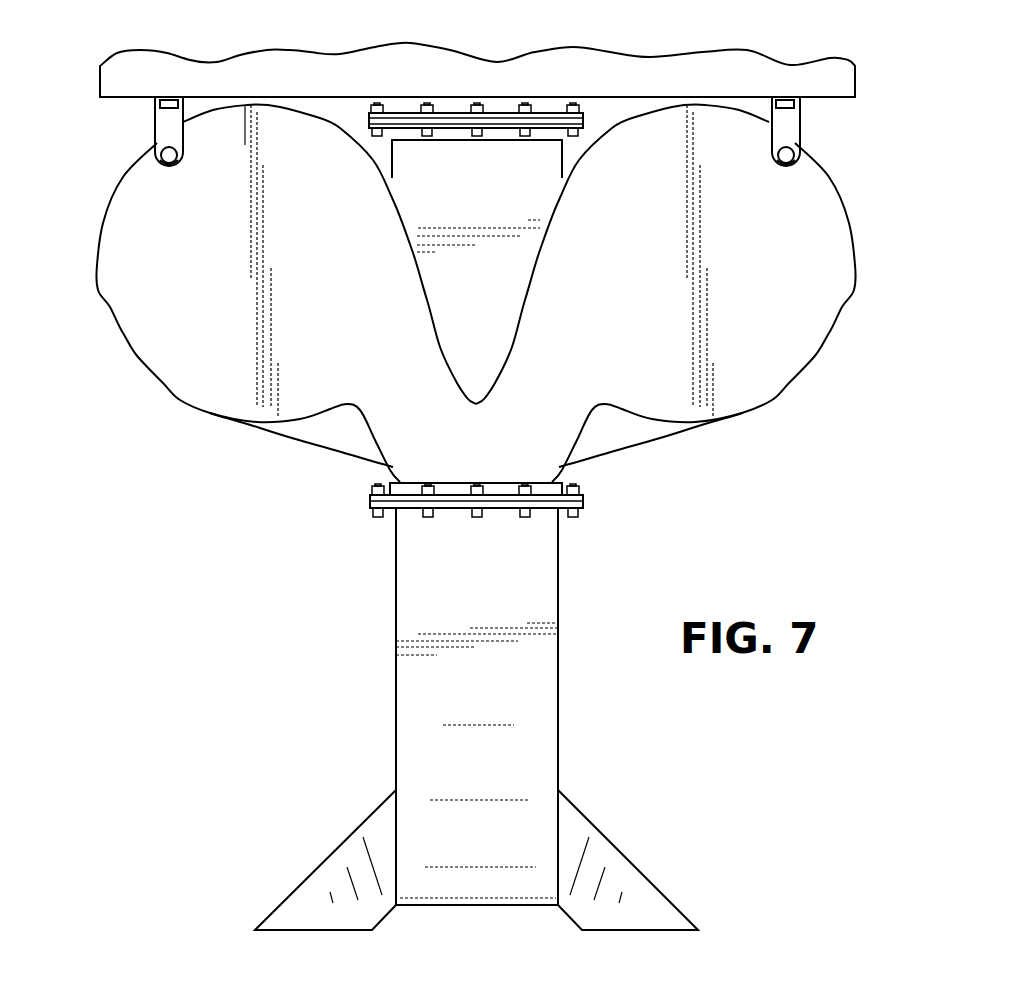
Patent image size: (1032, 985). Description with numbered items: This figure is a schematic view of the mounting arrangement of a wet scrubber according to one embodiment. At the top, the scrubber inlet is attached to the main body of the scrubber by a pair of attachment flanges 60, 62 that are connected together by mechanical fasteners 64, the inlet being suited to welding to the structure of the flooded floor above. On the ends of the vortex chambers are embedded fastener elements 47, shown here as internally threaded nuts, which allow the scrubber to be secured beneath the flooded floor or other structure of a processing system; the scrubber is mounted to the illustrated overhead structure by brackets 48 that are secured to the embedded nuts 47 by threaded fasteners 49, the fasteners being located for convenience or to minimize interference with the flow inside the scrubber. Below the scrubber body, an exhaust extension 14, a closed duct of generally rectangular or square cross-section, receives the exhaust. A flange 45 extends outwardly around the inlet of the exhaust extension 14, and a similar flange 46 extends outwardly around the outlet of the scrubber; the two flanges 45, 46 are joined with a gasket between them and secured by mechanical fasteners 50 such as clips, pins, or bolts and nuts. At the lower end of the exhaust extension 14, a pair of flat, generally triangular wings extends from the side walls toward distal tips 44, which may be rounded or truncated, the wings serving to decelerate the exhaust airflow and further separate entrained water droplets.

The exhaust extension 14 is at (472, 722).
The tip of the wings 44 is at (238, 930).
The flange 45 is at (587, 503).
The flange 46 is at (586, 496).
The embedded fastener elements 47 is at (157, 160).
The brackets 48 is at (155, 123).
The threaded fasteners 49 is at (165, 152).
The mechanical fasteners 50 is at (386, 490).
The attachment flange 60 is at (565, 140).
The attachment flange 62 is at (586, 137).
The mechanical fasteners 64 is at (477, 102).